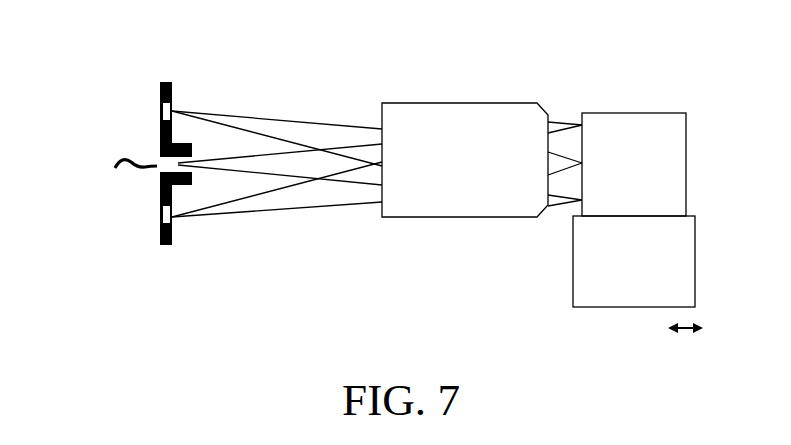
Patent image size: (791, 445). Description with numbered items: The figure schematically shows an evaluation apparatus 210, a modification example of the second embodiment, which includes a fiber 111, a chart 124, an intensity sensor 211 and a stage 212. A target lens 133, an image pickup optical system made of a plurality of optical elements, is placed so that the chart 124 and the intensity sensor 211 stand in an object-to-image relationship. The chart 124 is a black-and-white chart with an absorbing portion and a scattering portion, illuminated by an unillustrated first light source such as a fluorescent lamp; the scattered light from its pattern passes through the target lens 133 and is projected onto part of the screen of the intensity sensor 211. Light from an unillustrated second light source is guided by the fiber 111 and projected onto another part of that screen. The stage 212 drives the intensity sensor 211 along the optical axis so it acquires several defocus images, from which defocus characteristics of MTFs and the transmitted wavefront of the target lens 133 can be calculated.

The fiber 111 is at (118, 162).
The chart 124 is at (167, 82).
The target lens 133 is at (451, 113).
The evaluation apparatus 210 is at (483, 40).
The intensity sensor 211 is at (634, 164).
The stage 212 is at (638, 274).